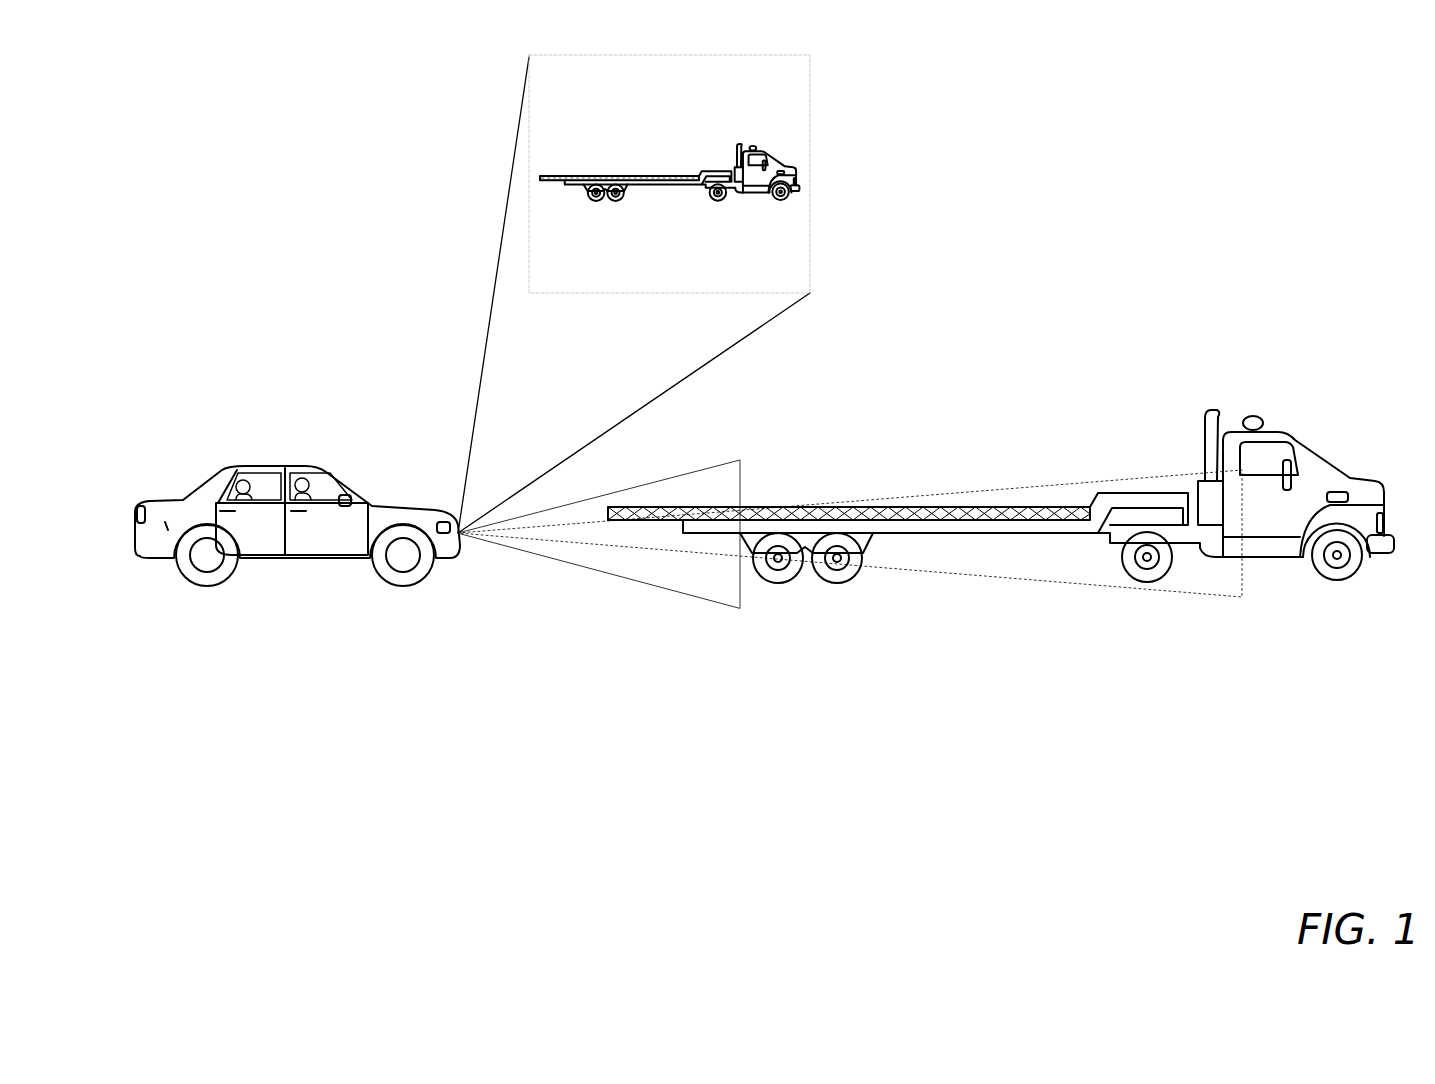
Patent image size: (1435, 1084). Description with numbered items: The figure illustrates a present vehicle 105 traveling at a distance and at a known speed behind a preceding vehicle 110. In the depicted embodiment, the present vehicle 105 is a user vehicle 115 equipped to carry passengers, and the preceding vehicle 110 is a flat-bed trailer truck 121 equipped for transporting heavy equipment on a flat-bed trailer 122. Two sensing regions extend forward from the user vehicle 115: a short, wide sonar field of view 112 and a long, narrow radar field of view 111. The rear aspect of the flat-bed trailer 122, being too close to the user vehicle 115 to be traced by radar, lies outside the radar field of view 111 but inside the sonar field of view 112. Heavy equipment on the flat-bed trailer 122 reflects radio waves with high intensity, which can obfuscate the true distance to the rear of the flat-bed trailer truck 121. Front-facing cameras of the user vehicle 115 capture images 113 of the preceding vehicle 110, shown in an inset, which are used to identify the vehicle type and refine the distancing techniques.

The present vehicle 105 is at (211, 444).
The user vehicle 115 is at (289, 436).
The sonar field of view 112 is at (712, 470).
The preceding vehicle 110 is at (1250, 372).
The radar field of view 111 is at (1037, 488).
The flat-bed trailer 122 is at (751, 498).
The flat-bed trailer truck 121 is at (1334, 420).
The captured images 113 is at (499, 110).